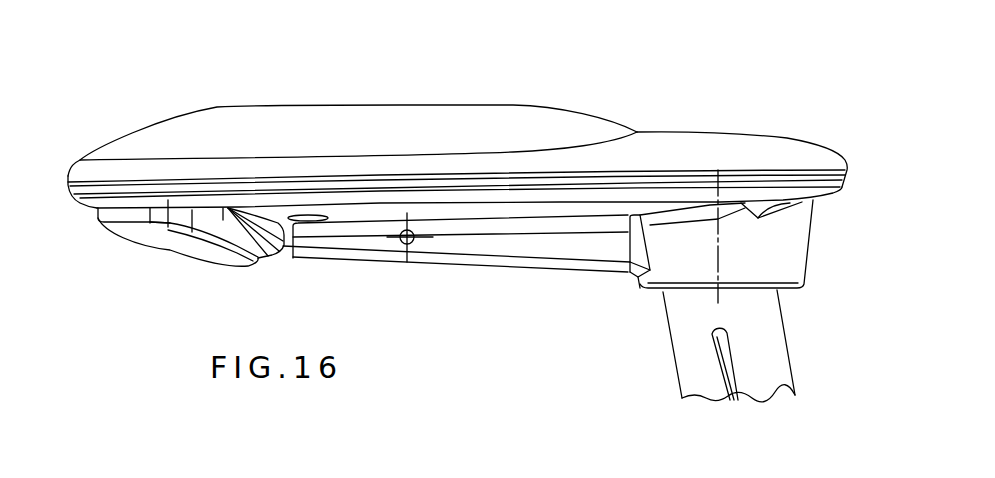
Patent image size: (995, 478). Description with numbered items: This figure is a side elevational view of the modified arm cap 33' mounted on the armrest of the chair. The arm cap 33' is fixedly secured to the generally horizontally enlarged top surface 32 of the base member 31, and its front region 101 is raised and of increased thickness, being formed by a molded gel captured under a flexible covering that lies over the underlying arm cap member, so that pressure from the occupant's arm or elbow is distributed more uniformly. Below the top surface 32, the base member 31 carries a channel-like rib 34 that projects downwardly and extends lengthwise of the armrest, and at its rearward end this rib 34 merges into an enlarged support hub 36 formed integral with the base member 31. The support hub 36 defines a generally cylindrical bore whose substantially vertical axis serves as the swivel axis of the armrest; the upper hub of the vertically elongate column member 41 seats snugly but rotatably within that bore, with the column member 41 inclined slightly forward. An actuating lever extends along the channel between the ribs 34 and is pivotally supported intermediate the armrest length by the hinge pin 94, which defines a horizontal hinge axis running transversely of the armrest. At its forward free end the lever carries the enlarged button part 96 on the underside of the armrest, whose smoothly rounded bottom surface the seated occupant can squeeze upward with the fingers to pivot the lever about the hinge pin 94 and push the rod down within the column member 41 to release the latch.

The front region 101 is at (310, 118).
The modified arm cap 33' is at (457, 116).
The top surface 32 is at (149, 242).
The button part 96 is at (187, 243).
The hinge pin 94 is at (403, 243).
The base member 31 is at (473, 257).
The channel-like rib 34 is at (540, 250).
The support hub 36 is at (787, 244).
The column member 41 is at (773, 348).